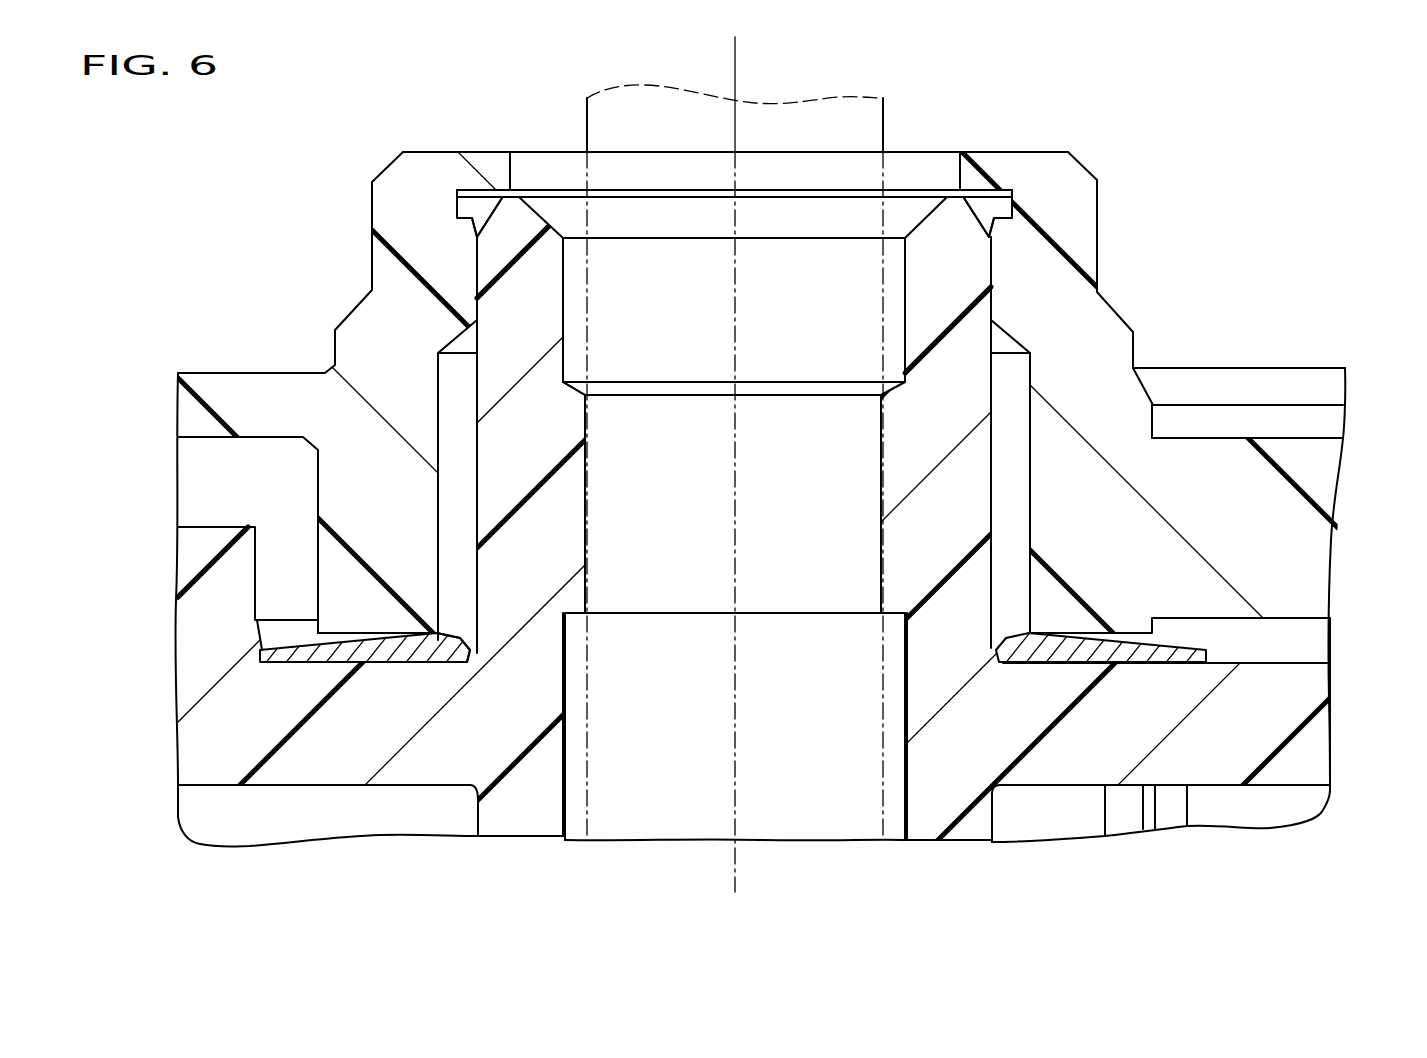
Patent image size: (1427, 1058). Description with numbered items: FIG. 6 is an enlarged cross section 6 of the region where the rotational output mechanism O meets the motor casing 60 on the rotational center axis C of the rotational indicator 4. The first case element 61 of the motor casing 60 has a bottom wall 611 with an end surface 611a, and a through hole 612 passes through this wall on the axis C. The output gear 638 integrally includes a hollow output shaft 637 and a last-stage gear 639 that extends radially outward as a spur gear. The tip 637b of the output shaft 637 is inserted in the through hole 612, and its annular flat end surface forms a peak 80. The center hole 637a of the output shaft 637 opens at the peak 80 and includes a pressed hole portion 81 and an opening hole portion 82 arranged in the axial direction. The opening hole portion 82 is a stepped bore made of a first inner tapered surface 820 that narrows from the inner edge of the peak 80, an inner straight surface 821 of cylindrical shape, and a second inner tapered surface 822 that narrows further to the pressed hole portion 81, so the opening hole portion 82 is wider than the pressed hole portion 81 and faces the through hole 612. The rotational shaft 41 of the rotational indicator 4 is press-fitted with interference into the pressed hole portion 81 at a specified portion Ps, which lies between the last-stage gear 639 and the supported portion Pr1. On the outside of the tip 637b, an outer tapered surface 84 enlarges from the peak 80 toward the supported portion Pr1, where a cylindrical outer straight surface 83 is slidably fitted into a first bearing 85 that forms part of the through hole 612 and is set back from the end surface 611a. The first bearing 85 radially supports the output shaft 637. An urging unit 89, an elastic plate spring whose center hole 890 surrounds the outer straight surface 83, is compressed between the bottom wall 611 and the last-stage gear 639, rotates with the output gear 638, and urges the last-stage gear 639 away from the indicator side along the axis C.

The motor body cross-section 6 is at (1043, 120).
The rotational center axis C is at (737, 56).
The rotational indicator 4 is at (883, 118).
The rotational shaft 41 is at (733, 296).
The bottom wall 611 is at (402, 154).
The end surface 611a is at (468, 151).
The through hole 612 is at (960, 151).
The motor casing 60 is at (1003, 500).
The first case element 61 is at (1133, 357).
The peak 80 is at (517, 190).
The outer tapered surface 84 is at (983, 210).
The first bearing 85 is at (998, 250).
The outer straight surface 83 is at (1000, 292).
The opening hole portion 82 is at (904, 378).
The first inner tapered surface 820 is at (563, 227).
The inner straight surface 821 is at (564, 381).
The second inner tapered surface 822 is at (585, 395).
The pressed hole portion 81 is at (585, 507).
The last-stage gear 639 is at (227, 735).
The urging unit 89 is at (420, 642).
The center hole 890 is at (473, 656).
The output shaft 637 is at (523, 806).
The center hole 637a is at (905, 771).
The tip 637b is at (513, 236).
The output gear 638 is at (998, 822).
The rotational output mechanism O is at (325, 803).
The supported portion Pr1 is at (995, 283).
The specified portion Ps is at (885, 541).